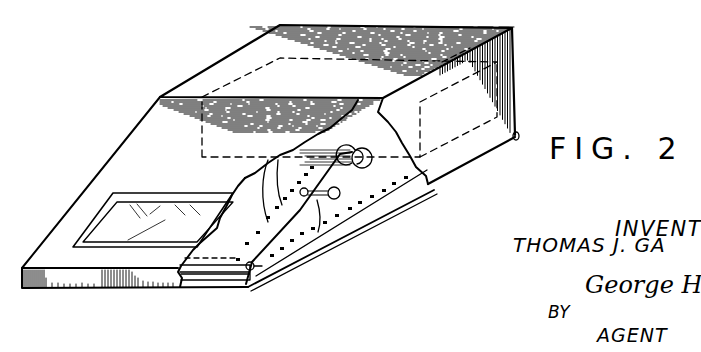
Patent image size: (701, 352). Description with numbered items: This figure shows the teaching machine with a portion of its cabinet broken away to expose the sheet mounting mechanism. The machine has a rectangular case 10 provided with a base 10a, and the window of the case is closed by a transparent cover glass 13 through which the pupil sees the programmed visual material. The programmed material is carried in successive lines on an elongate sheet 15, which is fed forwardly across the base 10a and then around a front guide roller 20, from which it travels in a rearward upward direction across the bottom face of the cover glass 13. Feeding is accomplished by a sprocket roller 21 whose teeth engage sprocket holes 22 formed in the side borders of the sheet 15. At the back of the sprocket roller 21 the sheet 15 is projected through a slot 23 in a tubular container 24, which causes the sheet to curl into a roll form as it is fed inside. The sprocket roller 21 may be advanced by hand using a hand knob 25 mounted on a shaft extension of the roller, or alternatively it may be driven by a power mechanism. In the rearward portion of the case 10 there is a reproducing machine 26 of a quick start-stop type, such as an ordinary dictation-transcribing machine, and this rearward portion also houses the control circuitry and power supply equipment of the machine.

The rectangular case 10 is at (522, 67).
The base 10a is at (203, 283).
The transparent cover glass 13 is at (157, 208).
The elongate sheet 15 is at (297, 257).
The front guide roller 20 is at (250, 286).
The sprocket roller 21 is at (314, 198).
The sprocket holes 22 is at (283, 198).
The slot 23 is at (339, 104).
The tubular container 24 is at (362, 148).
The hand knob 25 is at (330, 196).
The reproducing machine 26 is at (442, 60).